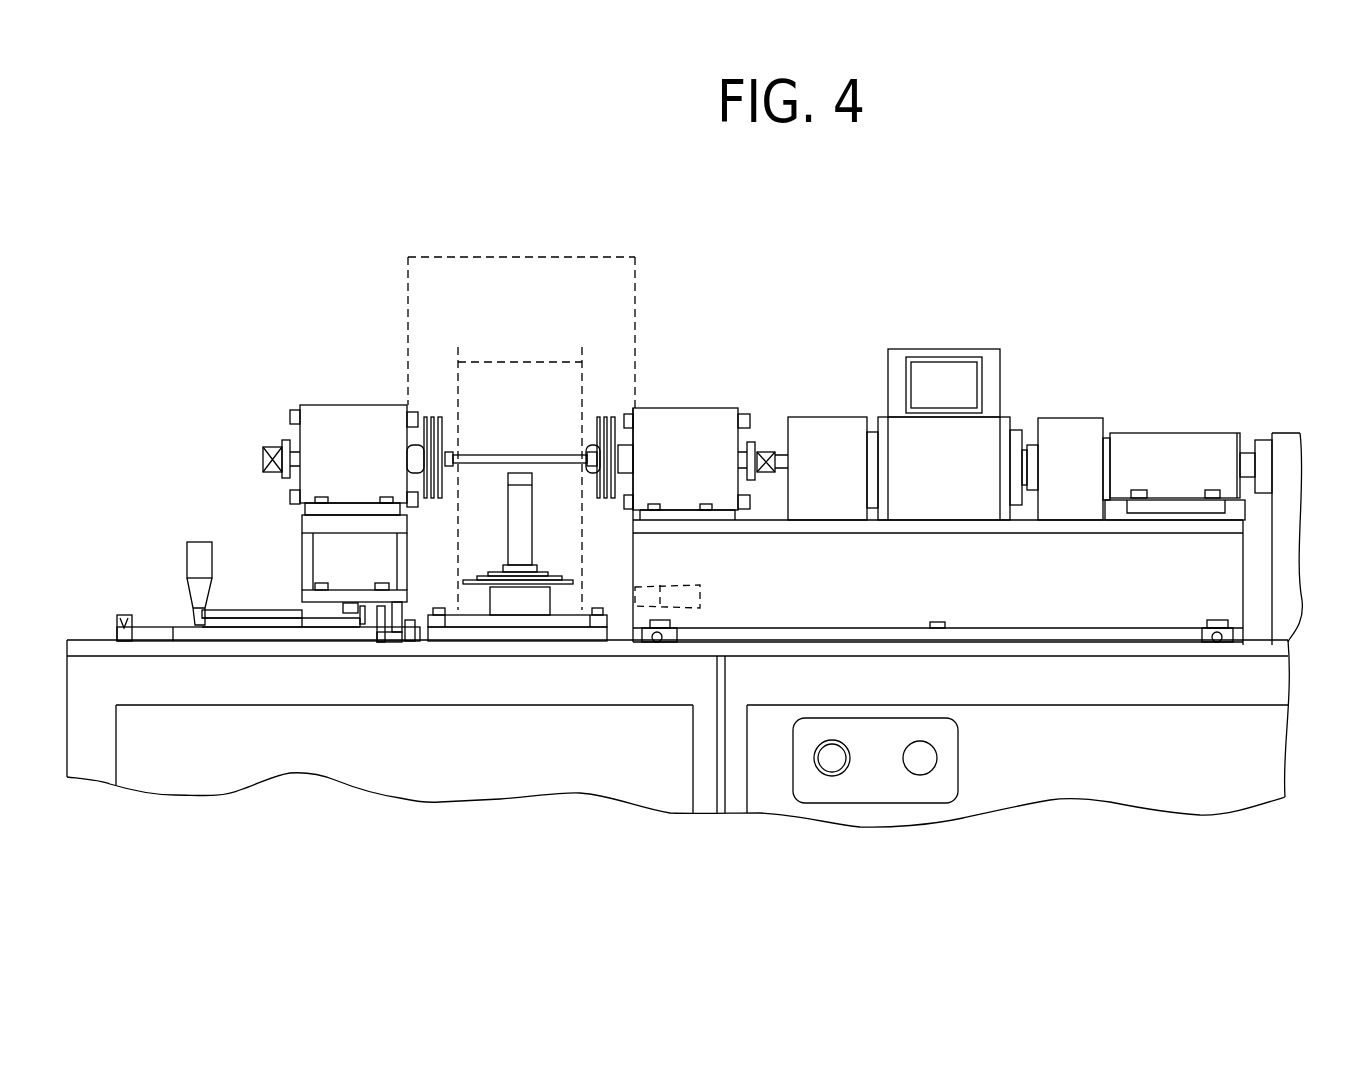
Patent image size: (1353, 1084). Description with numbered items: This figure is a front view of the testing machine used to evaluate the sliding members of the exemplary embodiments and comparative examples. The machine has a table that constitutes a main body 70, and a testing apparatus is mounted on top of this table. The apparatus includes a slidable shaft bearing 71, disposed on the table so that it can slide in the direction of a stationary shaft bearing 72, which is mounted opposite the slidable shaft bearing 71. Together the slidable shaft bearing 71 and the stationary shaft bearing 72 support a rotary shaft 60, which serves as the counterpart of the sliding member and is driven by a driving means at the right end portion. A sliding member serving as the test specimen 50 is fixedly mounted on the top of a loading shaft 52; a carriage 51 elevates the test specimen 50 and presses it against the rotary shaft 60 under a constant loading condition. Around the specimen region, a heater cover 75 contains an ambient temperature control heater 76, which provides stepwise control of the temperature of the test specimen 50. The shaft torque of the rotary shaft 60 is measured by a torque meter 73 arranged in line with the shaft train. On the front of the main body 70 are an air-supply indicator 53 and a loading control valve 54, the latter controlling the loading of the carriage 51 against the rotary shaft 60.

The test specimen 50 is at (543, 603).
The carriage 51 is at (522, 605).
The loading shaft 52 is at (515, 522).
The air-supply indicator 53 is at (830, 765).
The loading control valve 54 is at (920, 765).
The rotary shaft 60 is at (485, 452).
The main body 70 is at (678, 756).
The slidable shaft bearing 71 is at (327, 433).
The stationary shaft bearing 72 is at (687, 433).
The torque meter 73 is at (982, 435).
The heater cover 75 is at (590, 281).
The ambient temperature control heater 76 is at (477, 375).